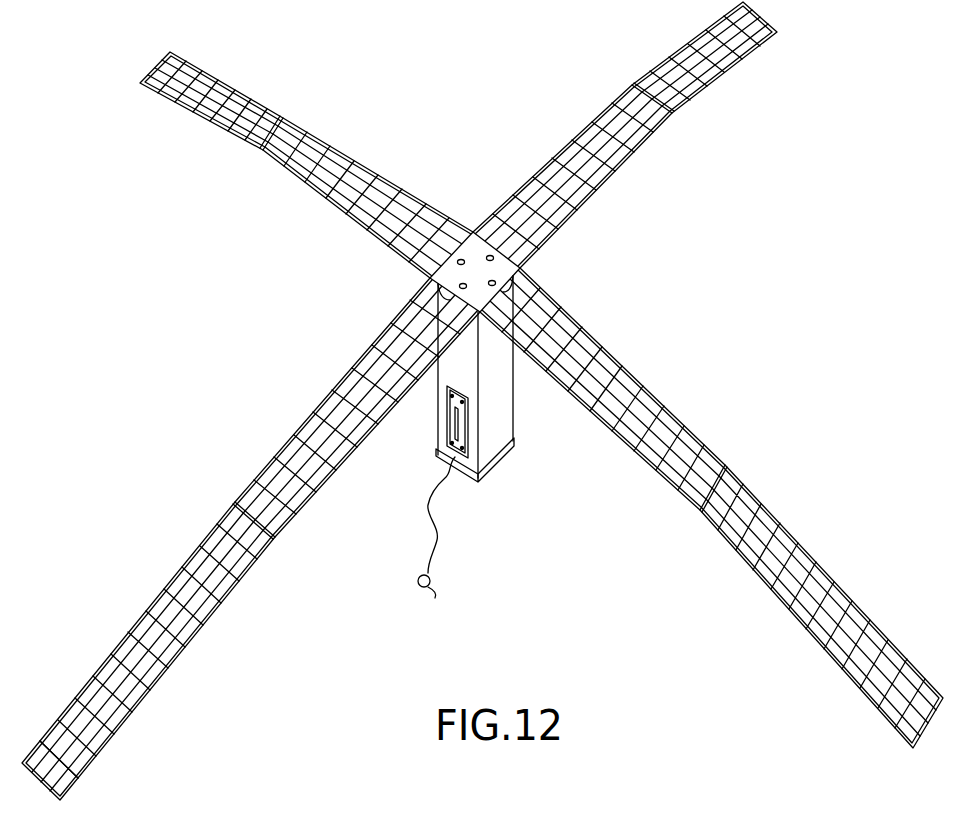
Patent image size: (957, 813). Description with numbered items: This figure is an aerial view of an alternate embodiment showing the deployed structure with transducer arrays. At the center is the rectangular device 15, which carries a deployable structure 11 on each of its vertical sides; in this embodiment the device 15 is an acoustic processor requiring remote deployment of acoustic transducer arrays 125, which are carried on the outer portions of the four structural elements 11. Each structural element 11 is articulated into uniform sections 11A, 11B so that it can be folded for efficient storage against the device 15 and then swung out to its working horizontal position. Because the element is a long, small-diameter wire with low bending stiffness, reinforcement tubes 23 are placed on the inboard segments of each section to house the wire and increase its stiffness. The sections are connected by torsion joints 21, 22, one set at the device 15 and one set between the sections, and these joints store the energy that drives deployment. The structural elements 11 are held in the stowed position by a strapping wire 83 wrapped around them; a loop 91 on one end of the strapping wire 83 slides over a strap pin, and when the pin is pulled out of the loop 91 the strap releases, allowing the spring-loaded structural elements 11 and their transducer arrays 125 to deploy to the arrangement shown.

The deployable structure 11 is at (292, 524).
The uniform section 11A is at (167, 670).
The uniform section 11B is at (313, 497).
The acoustic transducer array 125 is at (212, 82).
The reinforcement tube 23 is at (402, 196).
The torsion joint 21 is at (279, 116).
The torsion joint 22 is at (496, 240).
The rectangular device 15 is at (508, 452).
The strapping wire 83 is at (440, 556).
The loop 91 is at (434, 600).